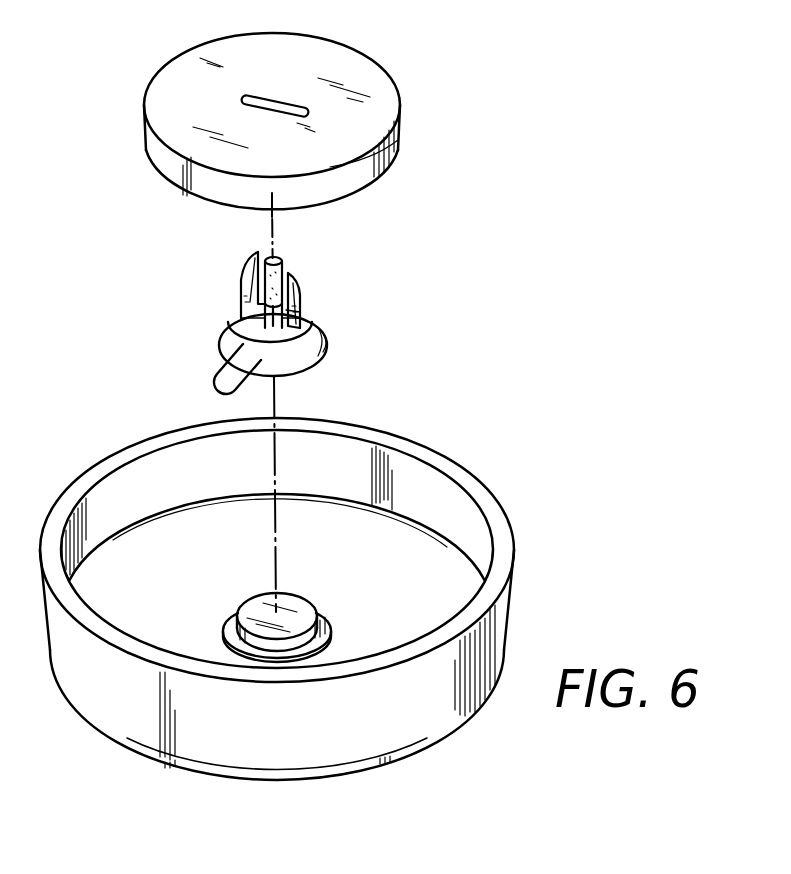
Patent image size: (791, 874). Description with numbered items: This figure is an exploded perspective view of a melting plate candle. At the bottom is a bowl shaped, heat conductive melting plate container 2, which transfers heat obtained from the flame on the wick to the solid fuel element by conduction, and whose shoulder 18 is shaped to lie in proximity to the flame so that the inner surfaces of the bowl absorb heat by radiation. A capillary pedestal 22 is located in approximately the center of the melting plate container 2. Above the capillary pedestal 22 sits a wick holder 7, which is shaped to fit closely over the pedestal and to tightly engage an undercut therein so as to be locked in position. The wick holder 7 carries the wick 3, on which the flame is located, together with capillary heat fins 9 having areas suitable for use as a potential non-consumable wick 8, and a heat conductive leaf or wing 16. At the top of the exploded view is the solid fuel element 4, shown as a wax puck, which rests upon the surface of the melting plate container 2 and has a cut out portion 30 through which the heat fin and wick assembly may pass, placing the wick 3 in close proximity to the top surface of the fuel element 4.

The melting plate container 2 is at (207, 564).
The wick 3 is at (276, 259).
The solid fuel element 4 is at (370, 167).
The wick holder 7 is at (247, 332).
The potential non-consumable wick 8 is at (257, 255).
The capillary heat fins 9 is at (297, 298).
The heat conductive leaf 16 is at (228, 375).
The shoulder 18 is at (397, 440).
The capillary pedestal 22 is at (323, 617).
The cut out portion 30 is at (268, 100).